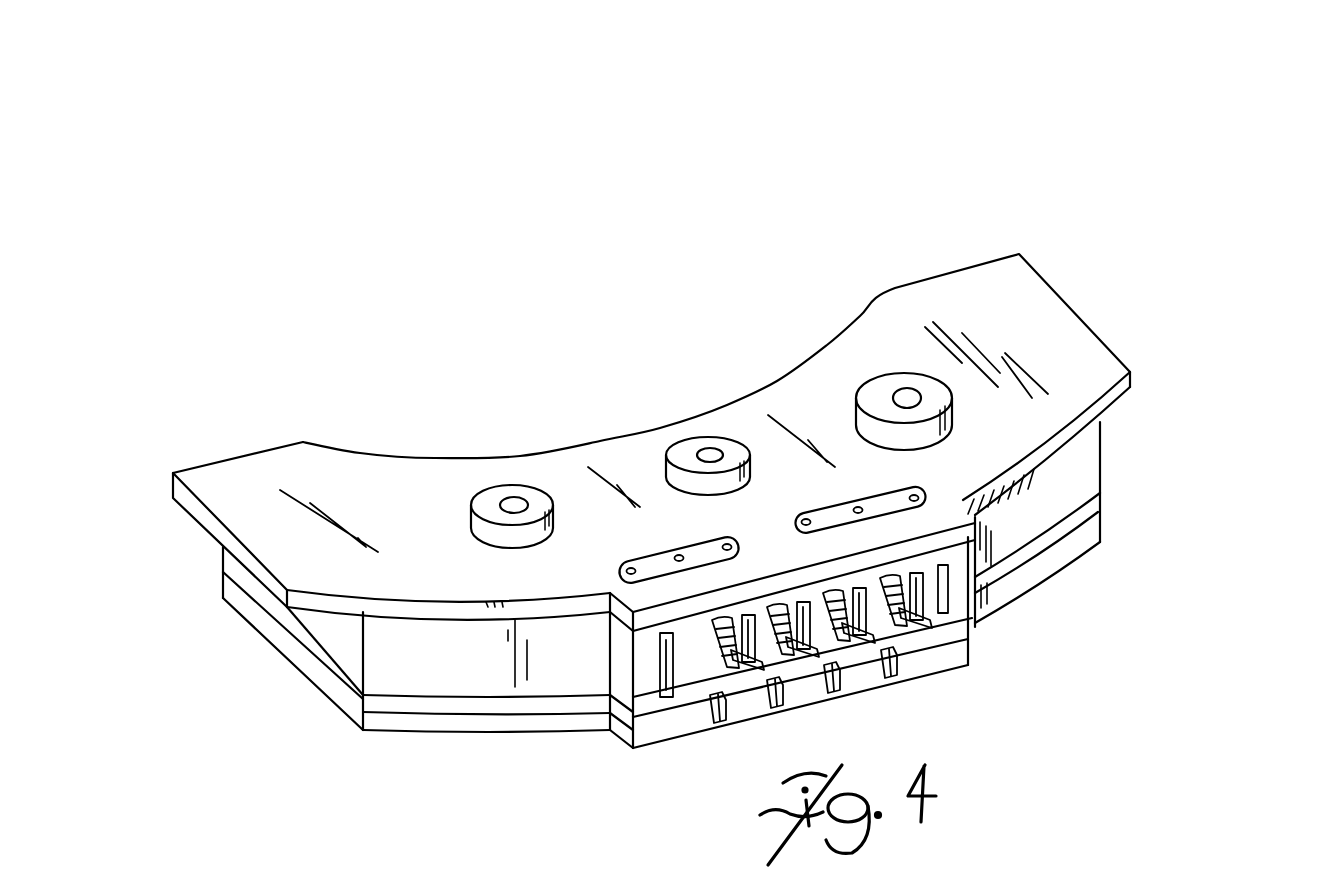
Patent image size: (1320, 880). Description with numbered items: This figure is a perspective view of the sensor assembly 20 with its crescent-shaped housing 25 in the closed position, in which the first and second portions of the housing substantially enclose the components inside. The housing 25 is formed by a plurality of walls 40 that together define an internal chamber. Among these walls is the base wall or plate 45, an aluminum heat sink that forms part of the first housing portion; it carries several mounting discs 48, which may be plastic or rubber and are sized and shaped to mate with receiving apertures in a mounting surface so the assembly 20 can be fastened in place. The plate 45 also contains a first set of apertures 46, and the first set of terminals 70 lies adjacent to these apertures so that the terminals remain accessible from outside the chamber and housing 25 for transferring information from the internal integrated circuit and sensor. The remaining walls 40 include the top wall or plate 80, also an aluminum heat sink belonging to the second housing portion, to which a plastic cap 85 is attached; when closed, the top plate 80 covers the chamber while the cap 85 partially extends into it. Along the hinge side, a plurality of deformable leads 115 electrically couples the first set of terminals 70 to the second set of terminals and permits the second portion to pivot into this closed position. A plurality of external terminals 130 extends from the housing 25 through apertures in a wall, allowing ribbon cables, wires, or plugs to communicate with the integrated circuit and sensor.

The sensor assembly 20 is at (1268, 112).
The housing 25 is at (1023, 252).
The plurality of walls 40 is at (1102, 453).
The base wall or plate 45 is at (434, 543).
The first set of apertures 46 is at (797, 520).
The mounting discs 48 is at (856, 395).
The first set of terminals 70 is at (725, 544).
The top wall or plate 80 is at (1060, 562).
The cap 85 is at (1102, 505).
The plurality of leads 115 is at (712, 718).
The plurality of external terminals 130 is at (705, 686).